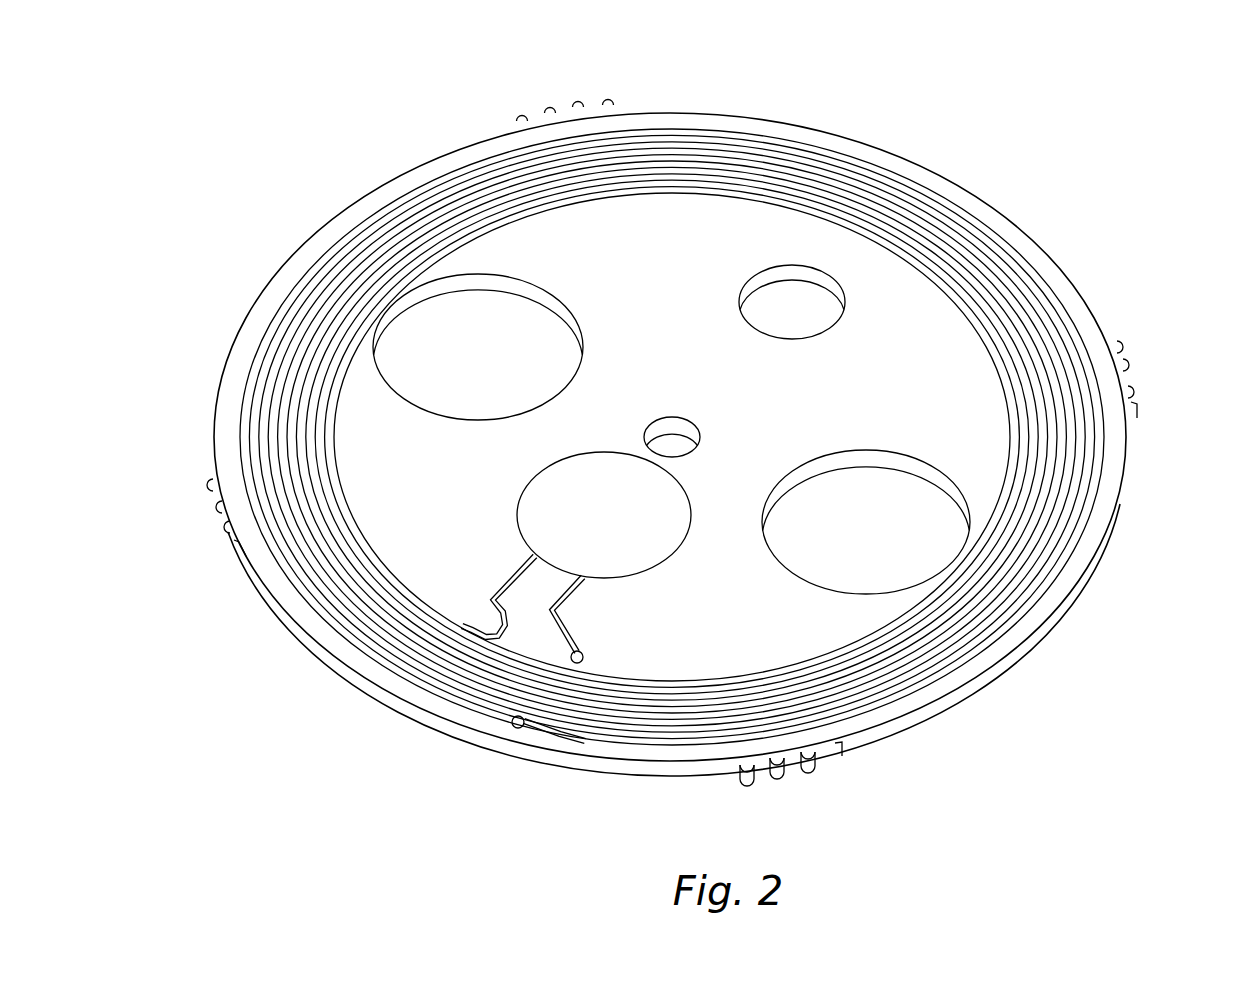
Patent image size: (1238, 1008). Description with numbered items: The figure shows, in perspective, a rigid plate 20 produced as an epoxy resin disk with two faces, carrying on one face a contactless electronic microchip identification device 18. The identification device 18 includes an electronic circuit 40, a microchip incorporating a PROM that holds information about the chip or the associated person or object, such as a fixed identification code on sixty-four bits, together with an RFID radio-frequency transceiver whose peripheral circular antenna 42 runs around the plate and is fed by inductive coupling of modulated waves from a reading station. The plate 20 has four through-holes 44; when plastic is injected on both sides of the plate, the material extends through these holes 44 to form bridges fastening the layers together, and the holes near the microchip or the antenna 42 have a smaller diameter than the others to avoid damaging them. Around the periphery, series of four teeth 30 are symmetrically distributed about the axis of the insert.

The contactless electronic microchip identification device 18 is at (657, 636).
The rigid plate 20 is at (975, 186).
The teeth 30 is at (548, 105).
The electronic circuit 40 is at (550, 498).
The peripheral circular antenna 42 is at (370, 570).
The through-holes 44 is at (500, 318).